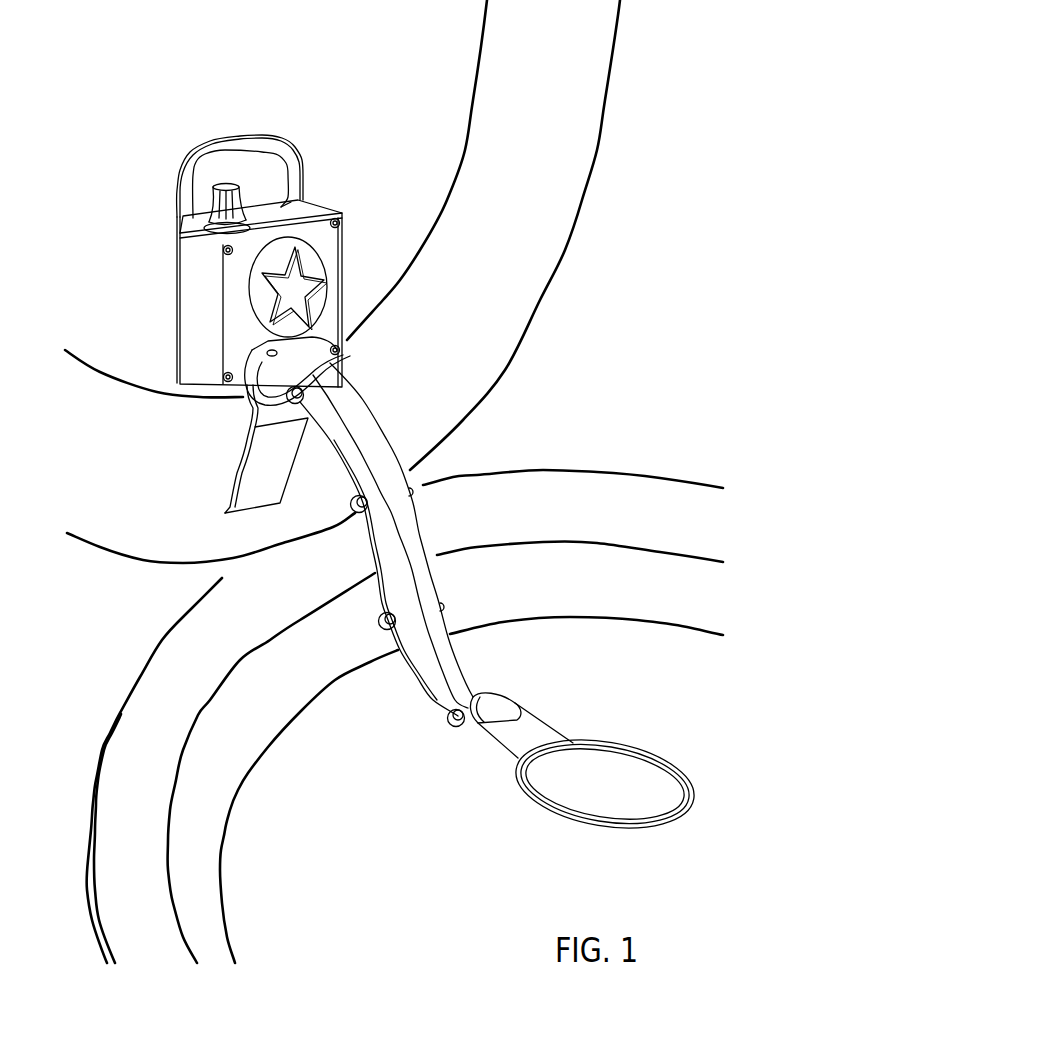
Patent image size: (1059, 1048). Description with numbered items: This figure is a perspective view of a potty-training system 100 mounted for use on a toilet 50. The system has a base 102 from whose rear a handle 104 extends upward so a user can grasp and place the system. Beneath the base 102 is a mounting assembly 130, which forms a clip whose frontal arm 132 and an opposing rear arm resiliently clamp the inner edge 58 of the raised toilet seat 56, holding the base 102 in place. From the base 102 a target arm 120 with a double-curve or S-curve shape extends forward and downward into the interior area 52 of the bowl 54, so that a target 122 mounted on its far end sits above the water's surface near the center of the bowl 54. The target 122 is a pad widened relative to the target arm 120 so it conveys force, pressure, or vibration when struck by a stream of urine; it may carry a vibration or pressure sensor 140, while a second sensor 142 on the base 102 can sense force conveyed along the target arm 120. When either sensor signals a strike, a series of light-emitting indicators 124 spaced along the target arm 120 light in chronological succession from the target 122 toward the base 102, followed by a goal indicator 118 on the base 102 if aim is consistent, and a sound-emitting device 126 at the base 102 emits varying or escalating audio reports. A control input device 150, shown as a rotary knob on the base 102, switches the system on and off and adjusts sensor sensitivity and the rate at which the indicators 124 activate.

The toilet 50 is at (394, 481).
The interior area 52 is at (590, 667).
The bowl 54 is at (598, 515).
The raised toilet seat 56 is at (485, 348).
The inner edge 58 is at (157, 392).
The potty-training system 100 is at (395, 428).
The base 102 is at (261, 226).
The handle 104 is at (245, 148).
The goal indicator 118 is at (297, 288).
The target arm 120 is at (415, 522).
The target 122 is at (565, 767).
The indicators 124 is at (355, 500).
The sound-emitting device 126 is at (313, 260).
The mounting assembly 130 is at (213, 491).
The frontal arm 132 is at (247, 493).
The vibration or pressure sensor 140 is at (625, 787).
The sensor 142 is at (330, 362).
The control input device 150 is at (220, 220).